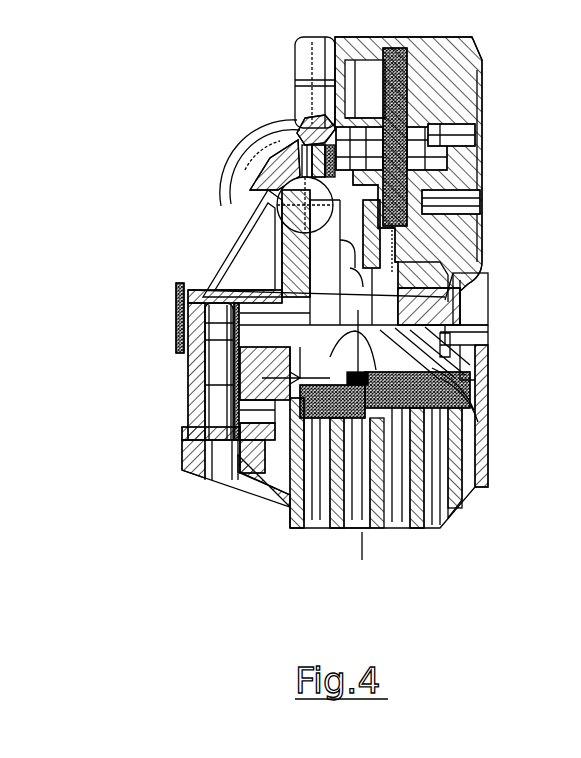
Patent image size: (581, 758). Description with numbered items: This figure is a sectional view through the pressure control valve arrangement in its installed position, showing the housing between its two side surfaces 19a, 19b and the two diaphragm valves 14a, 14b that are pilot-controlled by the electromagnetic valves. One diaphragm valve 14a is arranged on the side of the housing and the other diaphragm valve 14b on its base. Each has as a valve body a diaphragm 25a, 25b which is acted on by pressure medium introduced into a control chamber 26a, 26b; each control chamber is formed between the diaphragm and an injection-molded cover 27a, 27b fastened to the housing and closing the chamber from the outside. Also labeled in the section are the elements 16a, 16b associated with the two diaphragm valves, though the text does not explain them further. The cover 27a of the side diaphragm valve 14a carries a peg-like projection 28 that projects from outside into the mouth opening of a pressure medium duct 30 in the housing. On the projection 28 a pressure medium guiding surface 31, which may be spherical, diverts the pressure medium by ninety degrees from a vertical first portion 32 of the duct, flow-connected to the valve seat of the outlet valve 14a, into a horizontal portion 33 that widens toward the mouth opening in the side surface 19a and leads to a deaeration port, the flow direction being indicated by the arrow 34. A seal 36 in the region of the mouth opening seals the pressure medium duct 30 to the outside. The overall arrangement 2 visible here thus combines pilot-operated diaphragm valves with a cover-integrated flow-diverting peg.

The coupling device 2 is at (505, 352).
The diaphragm valve 14a is at (297, 94).
The diaphragm valve 14b is at (215, 390).
The first threaded spindle 16a is at (483, 146).
The second threaded spindle 16b is at (347, 528).
The side surface 19a is at (504, 384).
The side surface 19b is at (164, 405).
The diaphragm 25a is at (462, 136).
The diaphragm 25b is at (440, 473).
The control chamber 26a is at (447, 213).
The control chamber 26b is at (287, 500).
The cover 27a is at (457, 75).
The cover 27b is at (190, 466).
The projection 28 is at (460, 338).
The pressure medium duct 30 is at (176, 325).
The pressure medium guiding surface 31 is at (372, 305).
The first portion 32 is at (468, 402).
The portion 33 is at (200, 376).
The arrow 34 is at (311, 342).
The seal 36 is at (425, 305).